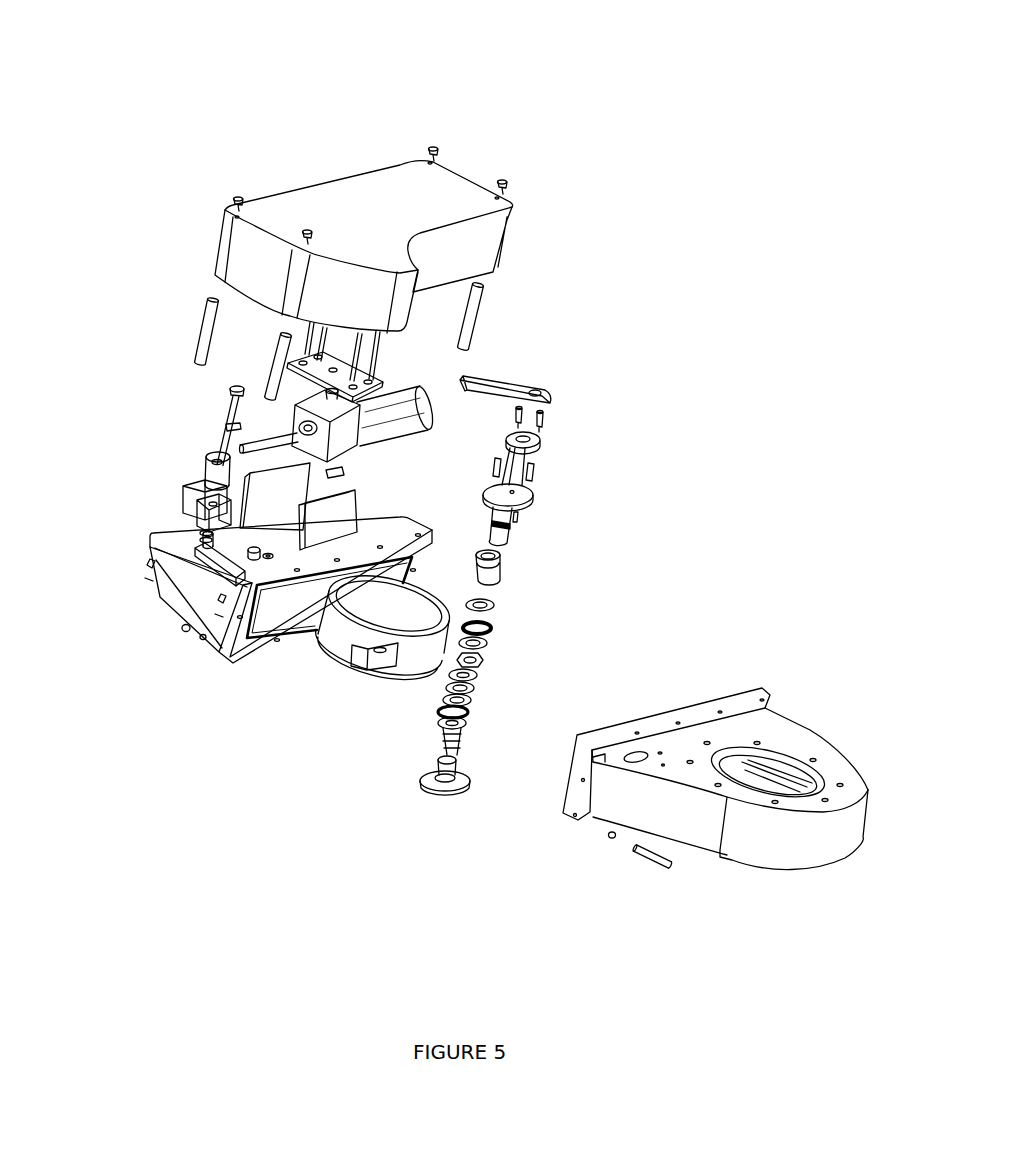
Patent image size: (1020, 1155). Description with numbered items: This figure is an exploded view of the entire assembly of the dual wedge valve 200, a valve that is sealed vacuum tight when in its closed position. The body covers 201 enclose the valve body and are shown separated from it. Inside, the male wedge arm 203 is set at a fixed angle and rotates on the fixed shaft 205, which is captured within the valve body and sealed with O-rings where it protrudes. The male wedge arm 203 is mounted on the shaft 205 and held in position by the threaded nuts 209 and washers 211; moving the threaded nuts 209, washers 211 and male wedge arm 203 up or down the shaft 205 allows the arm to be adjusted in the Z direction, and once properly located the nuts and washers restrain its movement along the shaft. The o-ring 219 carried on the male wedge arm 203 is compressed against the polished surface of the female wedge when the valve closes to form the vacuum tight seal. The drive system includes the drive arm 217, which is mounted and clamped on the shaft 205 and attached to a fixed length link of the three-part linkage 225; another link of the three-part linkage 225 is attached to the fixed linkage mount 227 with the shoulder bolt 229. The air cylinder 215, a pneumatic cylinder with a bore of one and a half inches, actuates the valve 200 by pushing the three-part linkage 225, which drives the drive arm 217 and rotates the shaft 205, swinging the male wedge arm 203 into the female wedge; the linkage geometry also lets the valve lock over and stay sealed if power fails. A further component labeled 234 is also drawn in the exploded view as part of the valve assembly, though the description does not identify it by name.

The dual wedge valve 200 is at (495, 140).
The body covers 201 is at (372, 197).
The male wedge arm 203 is at (338, 615).
The fixed shaft 205 is at (510, 533).
The threaded nuts 209 is at (470, 700).
The washers 211 is at (445, 717).
The air cylinder 215 is at (425, 410).
The drive arm 217 is at (503, 385).
The o-ring 219 is at (337, 663).
The three-part linkage 225 is at (200, 462).
The fixed linkage mount 227 is at (197, 497).
The shoulder bolt 229 is at (228, 402).
The support block 234 is at (335, 527).